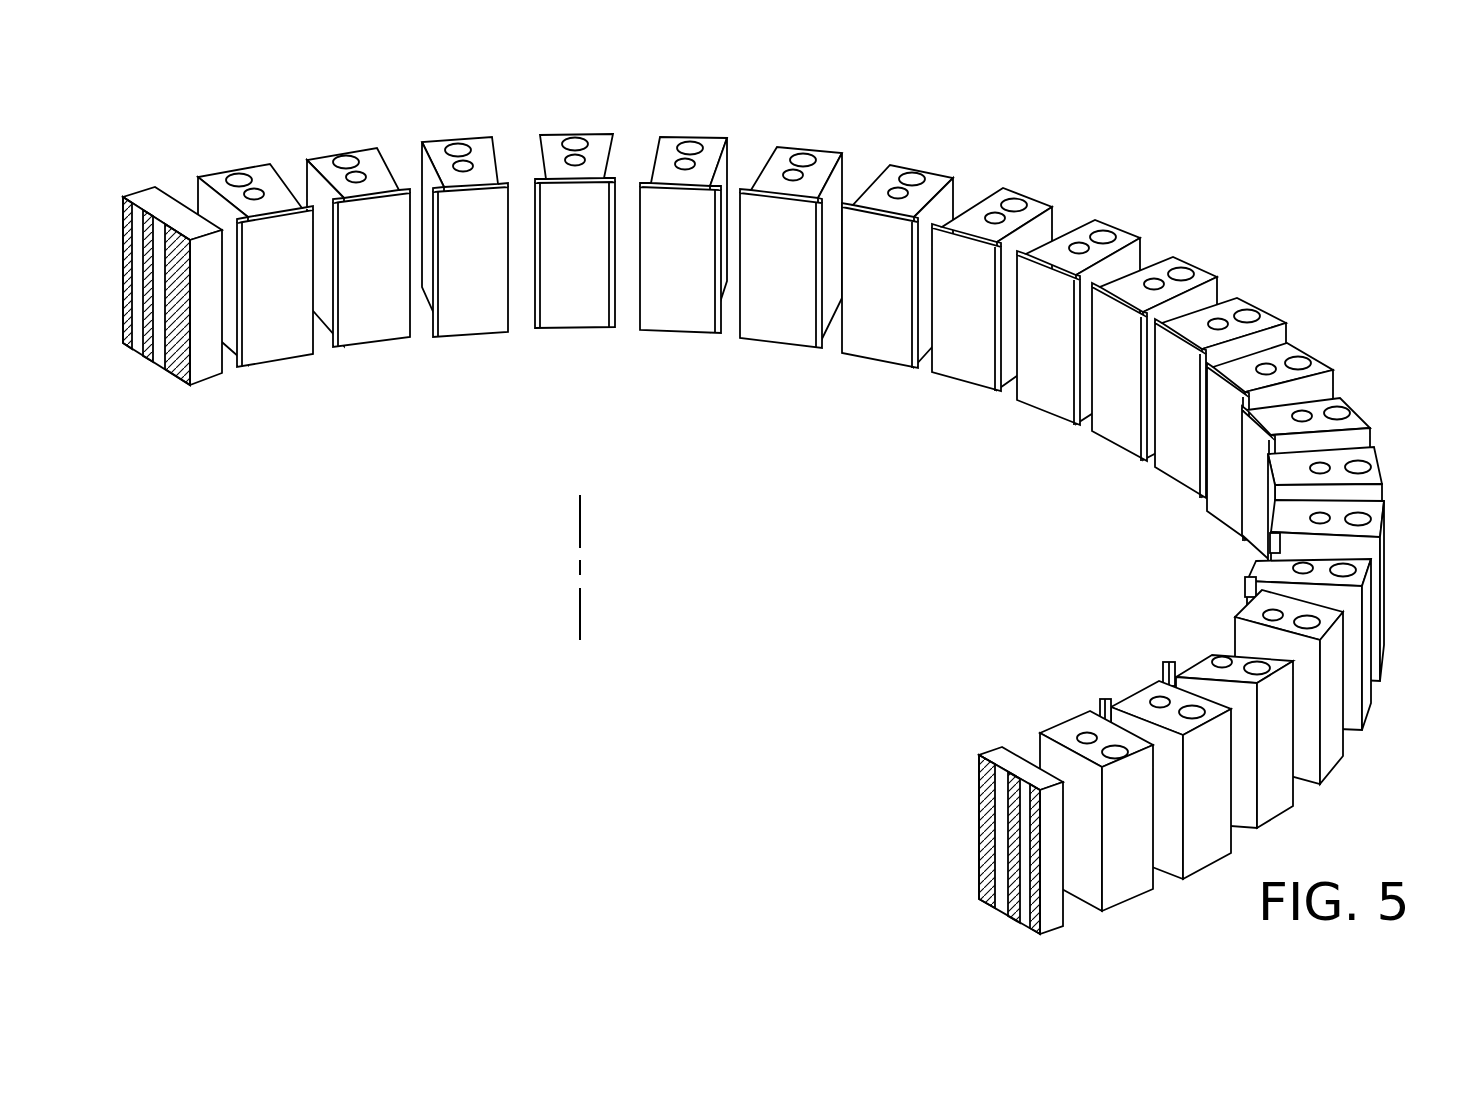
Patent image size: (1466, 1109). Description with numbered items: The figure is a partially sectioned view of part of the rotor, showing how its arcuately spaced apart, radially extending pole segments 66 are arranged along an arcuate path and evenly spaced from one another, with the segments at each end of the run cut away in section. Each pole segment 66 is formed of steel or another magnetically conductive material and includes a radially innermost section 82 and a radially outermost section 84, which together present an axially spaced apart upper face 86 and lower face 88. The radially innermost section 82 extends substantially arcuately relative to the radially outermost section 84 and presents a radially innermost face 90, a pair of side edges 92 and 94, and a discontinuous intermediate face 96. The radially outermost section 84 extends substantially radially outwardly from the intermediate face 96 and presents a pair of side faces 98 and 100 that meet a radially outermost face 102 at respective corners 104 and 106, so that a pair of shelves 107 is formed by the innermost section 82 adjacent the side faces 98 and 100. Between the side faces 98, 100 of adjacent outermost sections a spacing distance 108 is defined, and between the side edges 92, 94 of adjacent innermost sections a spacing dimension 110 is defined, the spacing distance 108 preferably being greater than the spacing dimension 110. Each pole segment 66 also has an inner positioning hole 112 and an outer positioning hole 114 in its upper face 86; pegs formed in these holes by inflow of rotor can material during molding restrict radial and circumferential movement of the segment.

The pole segment 66 is at (226, 166).
The radially innermost section 82 is at (378, 190).
The radially outermost section 84 is at (363, 152).
The upper face 86 is at (568, 178).
The lower face 88 is at (560, 335).
The radially innermost face 90 is at (578, 255).
The side edge 92 is at (532, 212).
The side edge 94 is at (618, 212).
The discontinuous intermediate face 96 is at (1172, 672).
The side face 98 is at (212, 208).
The side face 100 is at (617, 155).
The radially outermost face 102 is at (1327, 697).
The corner 104 is at (998, 190).
The corner 106 is at (1056, 214).
The shelf 107 is at (333, 190).
The spacing distance 108 is at (685, 112).
The spacing dimension 110 is at (257, 388).
The inner positioning hole 112 is at (888, 190).
The outer positioning hole 114 is at (912, 172).